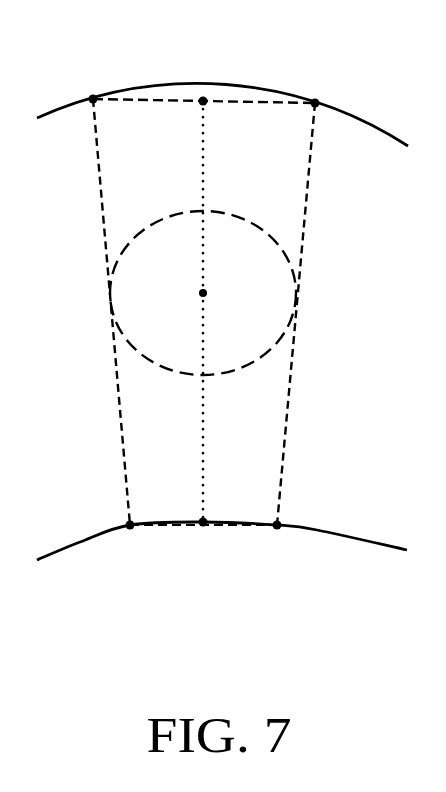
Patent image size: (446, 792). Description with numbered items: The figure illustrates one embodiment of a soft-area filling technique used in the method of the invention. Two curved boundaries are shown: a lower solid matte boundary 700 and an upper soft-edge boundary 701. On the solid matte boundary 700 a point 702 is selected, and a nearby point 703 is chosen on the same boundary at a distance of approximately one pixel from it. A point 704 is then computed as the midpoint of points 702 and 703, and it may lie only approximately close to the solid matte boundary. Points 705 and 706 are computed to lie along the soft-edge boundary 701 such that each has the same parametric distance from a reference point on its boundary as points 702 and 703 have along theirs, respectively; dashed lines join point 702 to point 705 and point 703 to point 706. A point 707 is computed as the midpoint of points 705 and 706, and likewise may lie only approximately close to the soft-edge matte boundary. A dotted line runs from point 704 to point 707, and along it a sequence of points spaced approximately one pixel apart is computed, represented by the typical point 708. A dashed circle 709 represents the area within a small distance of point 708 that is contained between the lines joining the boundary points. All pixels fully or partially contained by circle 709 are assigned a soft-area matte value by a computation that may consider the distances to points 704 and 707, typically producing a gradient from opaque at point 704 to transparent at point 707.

The solid matte boundary 700 is at (317, 530).
The soft-edge boundary 701 is at (340, 110).
The point on the solid matte boundary 702 is at (130, 526).
The nearby point on the solid matte boundary 703 is at (277, 525).
The midpoint of points 702 and 703 704 is at (203, 522).
The point on the soft-edge boundary 705 is at (93, 98).
The point on the soft-edge boundary 706 is at (315, 102).
The midpoint of points 705 and 706 707 is at (203, 100).
The typical point 708 is at (203, 293).
The circle 709 is at (227, 214).